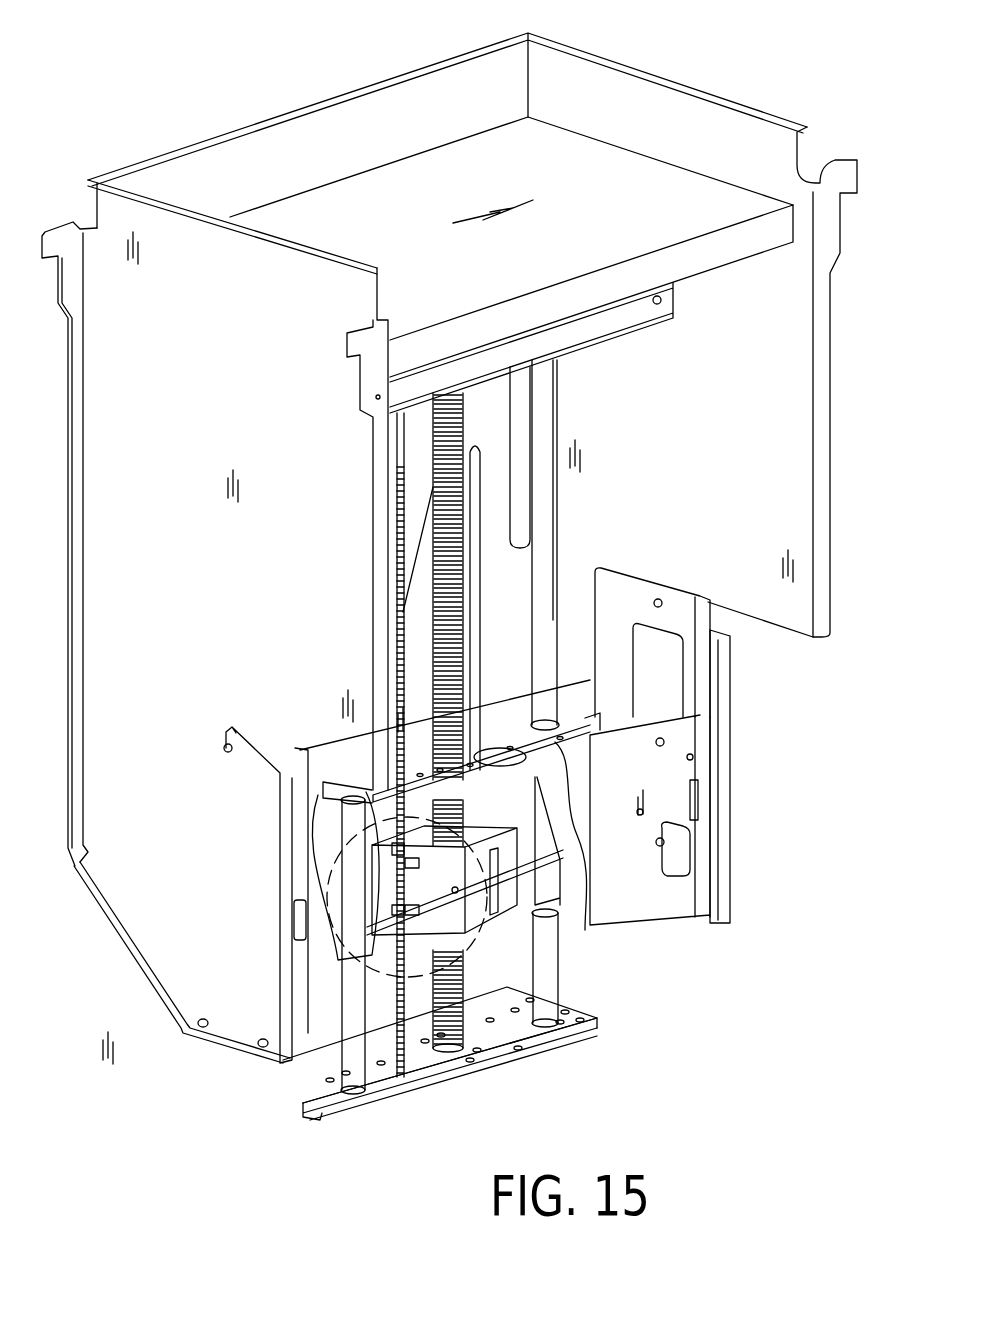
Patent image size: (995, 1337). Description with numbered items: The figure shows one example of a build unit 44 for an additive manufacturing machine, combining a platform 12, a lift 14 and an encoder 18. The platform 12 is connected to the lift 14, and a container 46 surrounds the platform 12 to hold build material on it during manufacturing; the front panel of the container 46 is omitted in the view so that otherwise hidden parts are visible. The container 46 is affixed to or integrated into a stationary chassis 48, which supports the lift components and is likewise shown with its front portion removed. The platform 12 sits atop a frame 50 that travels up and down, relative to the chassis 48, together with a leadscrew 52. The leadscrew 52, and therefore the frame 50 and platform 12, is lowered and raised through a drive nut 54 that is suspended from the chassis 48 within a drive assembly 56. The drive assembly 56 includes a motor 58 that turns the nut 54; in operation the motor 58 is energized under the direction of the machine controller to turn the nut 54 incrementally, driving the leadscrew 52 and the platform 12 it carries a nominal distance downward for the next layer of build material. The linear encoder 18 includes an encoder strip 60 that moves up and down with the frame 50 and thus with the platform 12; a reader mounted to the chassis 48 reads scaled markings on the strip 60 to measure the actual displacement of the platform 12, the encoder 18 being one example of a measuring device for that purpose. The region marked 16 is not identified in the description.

The platform 12 is at (433, 162).
The lift 14 is at (434, 1092).
The drive assembly 16 is at (330, 873).
The encoder 18 is at (421, 867).
The build unit 44 is at (819, 90).
The container 46 is at (335, 120).
The chassis 48 is at (716, 684).
The frame 50 is at (640, 313).
The leadscrew 52 is at (467, 1027).
The drive nut 54 is at (493, 907).
The drive assembly 56 is at (582, 945).
The motor 58 is at (540, 762).
The encoder strip 60 is at (402, 450).